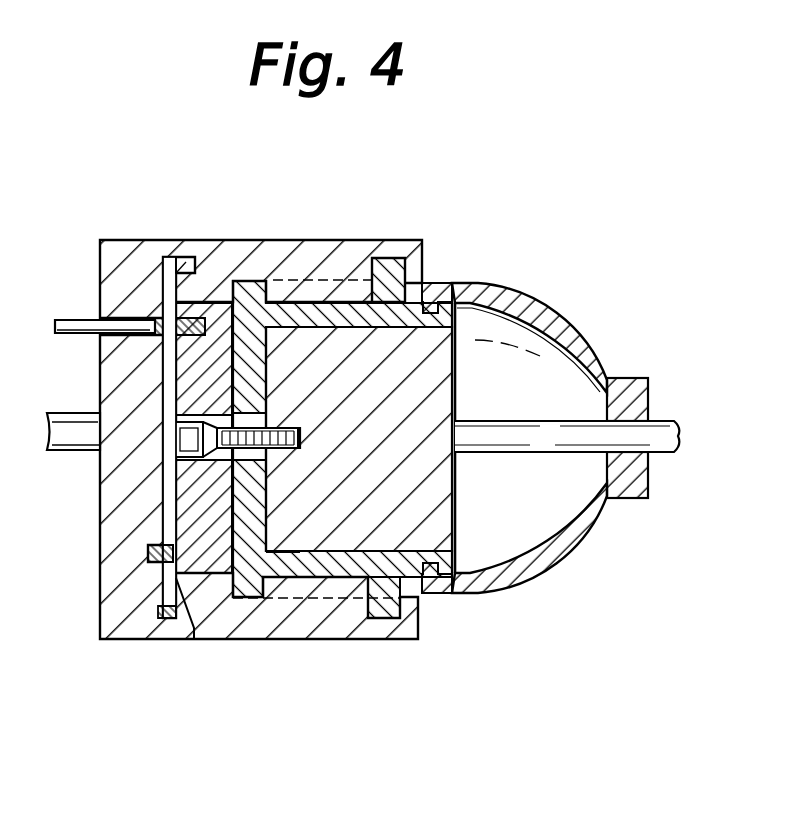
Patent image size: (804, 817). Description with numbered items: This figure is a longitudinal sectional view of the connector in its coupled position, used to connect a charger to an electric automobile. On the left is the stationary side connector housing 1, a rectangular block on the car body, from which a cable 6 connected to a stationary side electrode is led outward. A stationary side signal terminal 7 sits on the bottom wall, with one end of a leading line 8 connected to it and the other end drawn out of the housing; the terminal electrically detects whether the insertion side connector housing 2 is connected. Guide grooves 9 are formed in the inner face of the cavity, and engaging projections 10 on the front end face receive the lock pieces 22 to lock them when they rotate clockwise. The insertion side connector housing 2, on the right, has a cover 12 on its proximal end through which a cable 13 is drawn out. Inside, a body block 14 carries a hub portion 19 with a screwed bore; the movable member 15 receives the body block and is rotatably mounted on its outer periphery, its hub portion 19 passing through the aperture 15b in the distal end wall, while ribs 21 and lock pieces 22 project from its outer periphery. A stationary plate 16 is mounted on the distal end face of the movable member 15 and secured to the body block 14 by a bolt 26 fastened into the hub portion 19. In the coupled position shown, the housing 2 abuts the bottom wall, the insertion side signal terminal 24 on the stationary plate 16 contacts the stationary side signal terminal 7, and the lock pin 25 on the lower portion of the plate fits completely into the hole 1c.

The stationary side connector housing 1 is at (249, 225).
The hole 1c is at (148, 553).
The insertion side connector housing 2 is at (474, 268).
The cable 6 is at (57, 443).
The stationary side signal terminal 7 is at (170, 257).
The leading line 8 is at (75, 320).
The guide groove 9 is at (342, 282).
The engaging projection 10 is at (424, 250).
The cover 12 is at (582, 347).
The cable 13 is at (664, 432).
The body block 14 is at (457, 518).
The movable member 15 is at (313, 575).
The aperture 15b is at (273, 556).
The stationary plate 16 is at (204, 608).
The hub portion 19 is at (183, 430).
The rib 21 is at (260, 284).
The lock piece 22 is at (387, 262).
The insertion side signal terminal 24 is at (198, 272).
The lock pin 25 is at (157, 594).
The bolt 26 is at (176, 462).